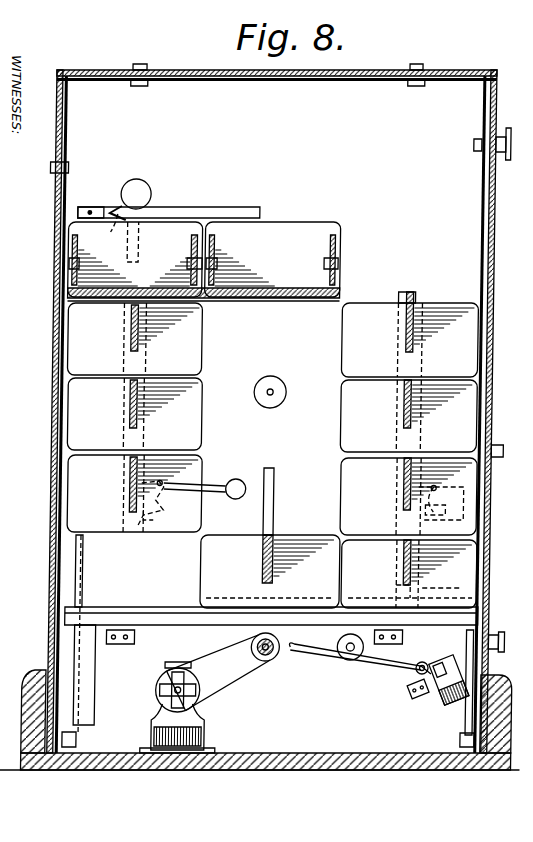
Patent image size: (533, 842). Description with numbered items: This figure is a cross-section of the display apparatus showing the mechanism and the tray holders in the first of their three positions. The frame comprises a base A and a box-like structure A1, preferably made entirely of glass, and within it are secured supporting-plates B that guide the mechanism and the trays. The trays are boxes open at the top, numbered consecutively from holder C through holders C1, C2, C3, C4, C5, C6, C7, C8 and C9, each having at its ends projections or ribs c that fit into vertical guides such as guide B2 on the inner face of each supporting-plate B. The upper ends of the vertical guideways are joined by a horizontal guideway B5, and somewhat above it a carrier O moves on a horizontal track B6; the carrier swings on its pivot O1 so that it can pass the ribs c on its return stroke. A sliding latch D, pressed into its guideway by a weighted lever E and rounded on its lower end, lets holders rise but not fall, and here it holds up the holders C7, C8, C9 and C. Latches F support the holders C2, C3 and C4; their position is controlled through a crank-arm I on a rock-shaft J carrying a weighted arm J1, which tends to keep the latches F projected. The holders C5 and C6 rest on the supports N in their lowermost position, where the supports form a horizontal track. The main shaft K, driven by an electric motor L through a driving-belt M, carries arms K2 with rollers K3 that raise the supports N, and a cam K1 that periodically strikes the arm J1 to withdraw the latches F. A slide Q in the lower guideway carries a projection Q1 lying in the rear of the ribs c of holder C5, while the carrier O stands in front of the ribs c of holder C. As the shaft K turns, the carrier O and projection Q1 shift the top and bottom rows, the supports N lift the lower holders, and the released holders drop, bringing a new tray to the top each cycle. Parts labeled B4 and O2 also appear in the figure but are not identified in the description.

The box-like structure A1 is at (345, 68).
The base A is at (290, 772).
The supporting-plate B is at (480, 690).
The vertical guide B2 is at (281, 496).
The vertical rod B4 is at (84, 598).
The horizontal guideway B5 is at (293, 302).
The horizontal track B6 is at (222, 203).
The tray or holder C is at (135, 259).
The tray or holder C1 is at (273, 259).
The tray or holder C2 is at (409, 334).
The tray or holder C3 is at (408, 416).
The tray or holder C4 is at (408, 496).
The tray or holder C5 is at (409, 575).
The tray or holder C6 is at (270, 571).
The tray or holder C7 is at (134, 493).
The tray or holder C8 is at (134, 414).
The tray or holder C9 is at (134, 339).
The rib c is at (410, 335).
The sliding latch D is at (143, 522).
The weighted lever E is at (240, 479).
The latch F is at (425, 515).
The crank-arm I is at (450, 657).
The rock-shaft J is at (372, 656).
The weighted arm J1 is at (446, 692).
The main shaft K is at (282, 660).
The cam K1 is at (245, 650).
The arm K2 is at (358, 660).
The roller K3 is at (398, 662).
The electric motor L is at (200, 732).
The driving-belt M is at (226, 682).
The support N is at (187, 612).
The carrier O is at (151, 190).
The pivot O1 is at (92, 210).
The arm O2 is at (118, 206).
The slide Q is at (452, 588).
The projection Q1 is at (399, 597).